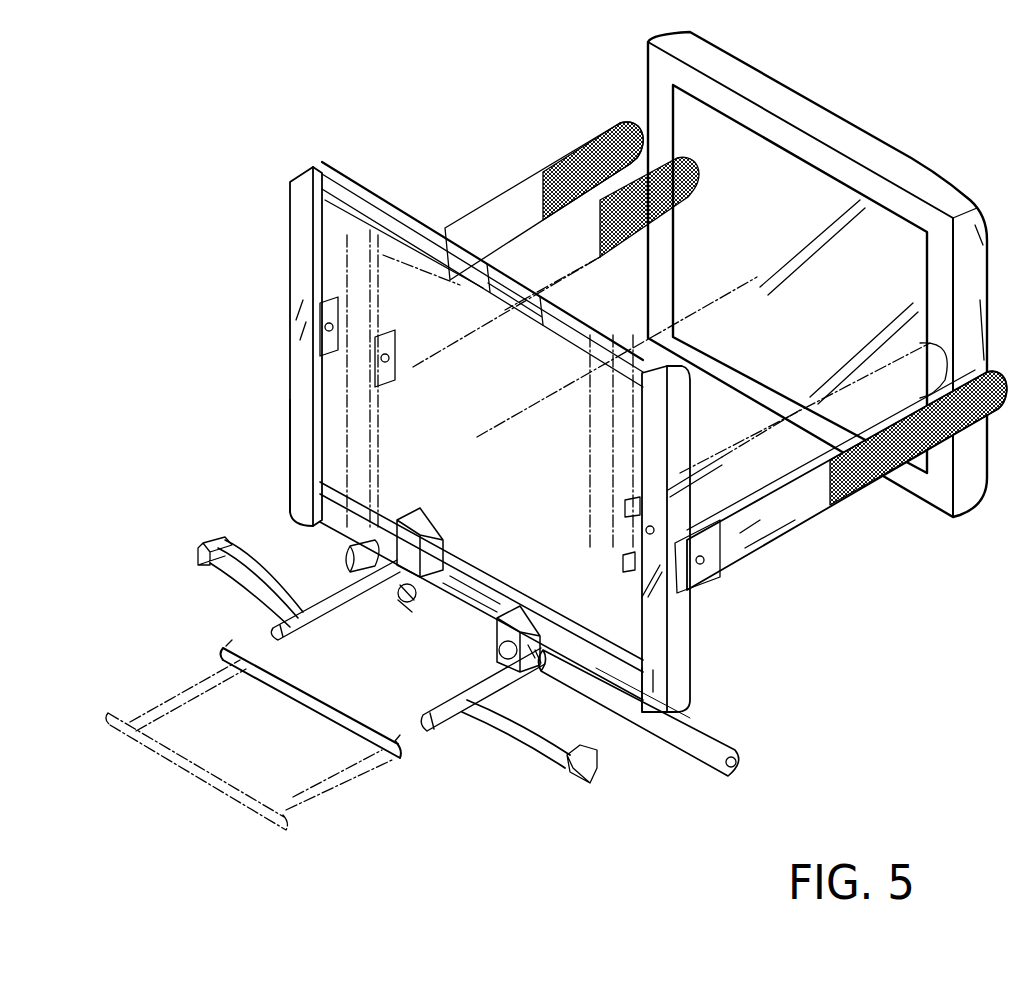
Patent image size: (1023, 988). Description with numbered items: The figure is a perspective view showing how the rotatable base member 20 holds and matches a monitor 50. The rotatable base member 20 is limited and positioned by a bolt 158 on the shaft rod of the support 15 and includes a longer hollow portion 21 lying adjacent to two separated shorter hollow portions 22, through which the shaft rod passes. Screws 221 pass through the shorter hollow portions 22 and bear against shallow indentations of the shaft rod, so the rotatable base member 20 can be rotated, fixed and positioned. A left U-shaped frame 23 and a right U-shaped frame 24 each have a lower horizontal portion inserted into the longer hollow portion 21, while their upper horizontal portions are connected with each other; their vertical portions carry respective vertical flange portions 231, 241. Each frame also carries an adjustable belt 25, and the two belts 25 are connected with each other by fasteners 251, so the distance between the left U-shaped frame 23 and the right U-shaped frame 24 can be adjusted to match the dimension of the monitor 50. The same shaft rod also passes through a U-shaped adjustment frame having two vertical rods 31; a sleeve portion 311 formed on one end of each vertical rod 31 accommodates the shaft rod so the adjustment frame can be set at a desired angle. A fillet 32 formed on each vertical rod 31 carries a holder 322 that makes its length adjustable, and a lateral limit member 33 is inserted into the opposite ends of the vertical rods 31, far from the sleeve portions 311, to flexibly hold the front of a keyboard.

The support rod 15 is at (668, 760).
The bolt 158 is at (350, 554).
The rotatable base member 20 is at (481, 588).
The longer hollow portion 21 is at (497, 582).
The shorter hollow portions 22 is at (484, 578).
The screws 221 is at (498, 650).
The left U-shaped frame 23 is at (266, 314).
The vertical flange portion 231 is at (300, 262).
The right U-shaped frame 24 is at (690, 539).
The vertical flange portion 241 is at (653, 684).
The adjustable belts 25 is at (719, 335).
The fasteners 251 is at (575, 145).
The vertical rods 31 is at (424, 671).
The sleeve portion 311 is at (536, 660).
The fillet 32 is at (363, 677).
The holder 322 is at (205, 540).
The lateral limit member 33 is at (330, 722).
The monitor 50 is at (912, 172).